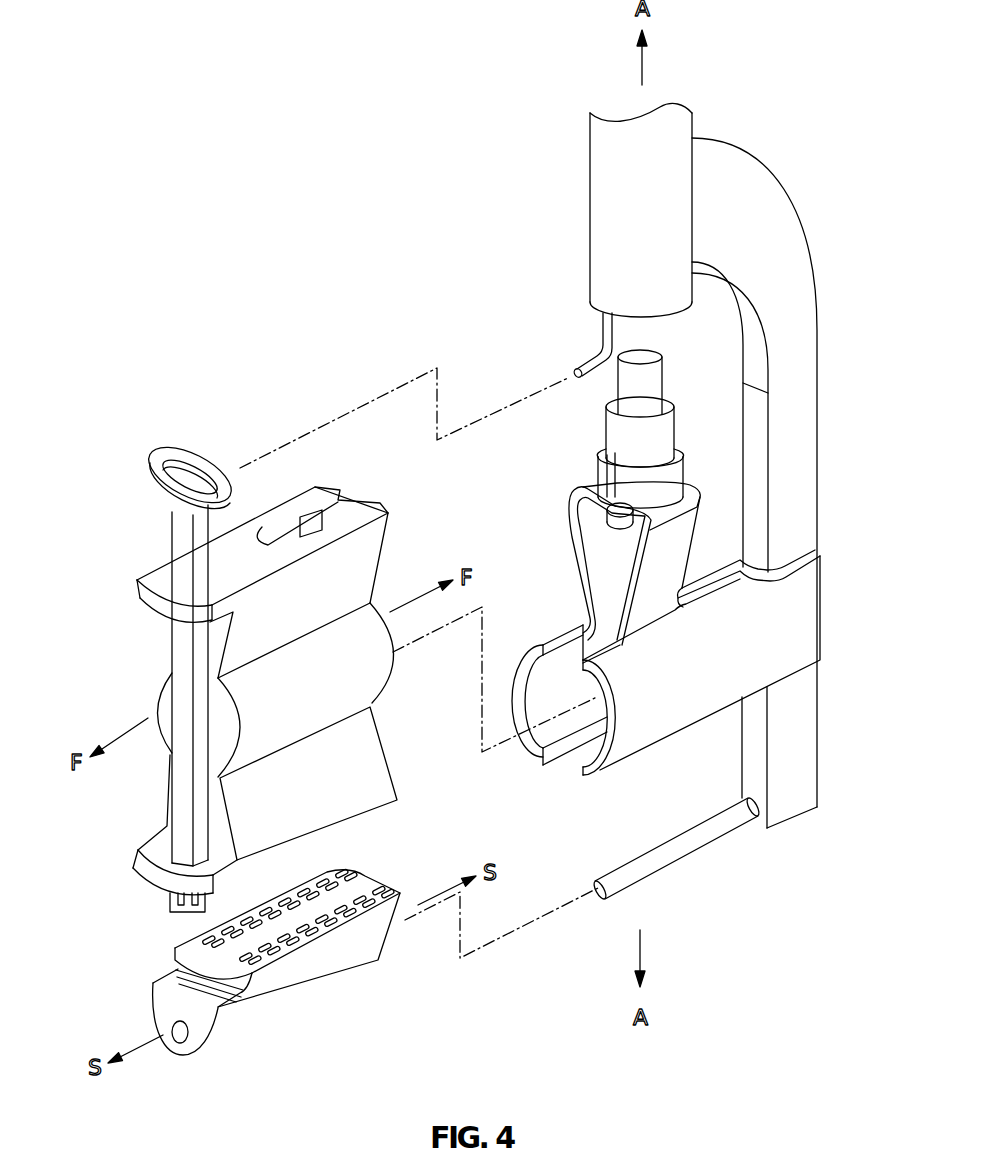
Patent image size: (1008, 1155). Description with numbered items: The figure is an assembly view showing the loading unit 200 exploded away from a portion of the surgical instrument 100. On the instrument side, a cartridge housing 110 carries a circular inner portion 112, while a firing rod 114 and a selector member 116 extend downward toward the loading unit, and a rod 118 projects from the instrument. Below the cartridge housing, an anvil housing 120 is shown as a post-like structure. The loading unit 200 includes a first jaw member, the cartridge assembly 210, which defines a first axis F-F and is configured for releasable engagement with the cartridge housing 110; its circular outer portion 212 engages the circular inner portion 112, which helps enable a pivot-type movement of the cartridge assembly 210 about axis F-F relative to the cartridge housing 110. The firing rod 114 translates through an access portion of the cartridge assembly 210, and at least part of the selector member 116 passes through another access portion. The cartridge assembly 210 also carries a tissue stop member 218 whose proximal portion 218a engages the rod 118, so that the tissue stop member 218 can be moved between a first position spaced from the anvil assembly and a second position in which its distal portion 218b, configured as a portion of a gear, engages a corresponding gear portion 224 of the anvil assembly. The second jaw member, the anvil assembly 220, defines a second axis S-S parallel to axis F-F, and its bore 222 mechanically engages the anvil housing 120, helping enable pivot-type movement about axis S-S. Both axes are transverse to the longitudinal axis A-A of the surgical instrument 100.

The surgical instrument 100 is at (549, 183).
The cartridge housing 110 is at (800, 610).
The circular inner portion 112 is at (567, 672).
The firing rod 114 is at (655, 386).
The selector member 116 is at (603, 519).
The rod 118 is at (588, 365).
The anvil housing 120 is at (686, 848).
The loading unit 200 is at (270, 745).
The cartridge assembly 210 is at (306, 673).
The circular outer portion 212 is at (378, 680).
The tissue stop member 218 is at (152, 682).
The proximal portion 218a is at (152, 468).
The distal portion 218b is at (170, 900).
The anvil assembly 220 is at (263, 962).
The bore 222 is at (175, 1032).
The portion of anvil assembly 224 is at (213, 985).